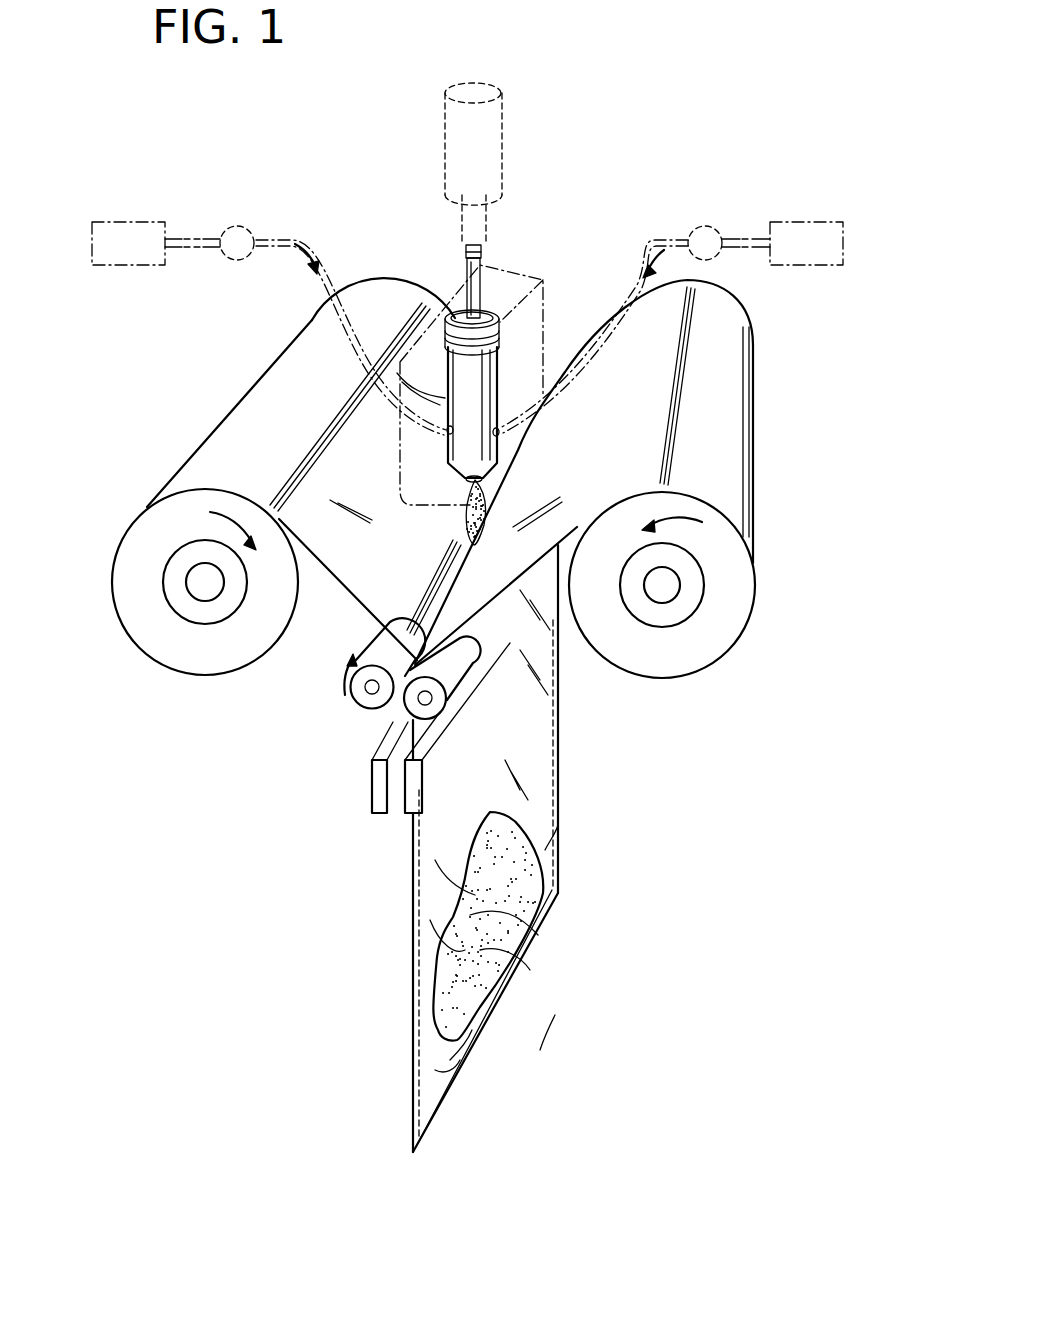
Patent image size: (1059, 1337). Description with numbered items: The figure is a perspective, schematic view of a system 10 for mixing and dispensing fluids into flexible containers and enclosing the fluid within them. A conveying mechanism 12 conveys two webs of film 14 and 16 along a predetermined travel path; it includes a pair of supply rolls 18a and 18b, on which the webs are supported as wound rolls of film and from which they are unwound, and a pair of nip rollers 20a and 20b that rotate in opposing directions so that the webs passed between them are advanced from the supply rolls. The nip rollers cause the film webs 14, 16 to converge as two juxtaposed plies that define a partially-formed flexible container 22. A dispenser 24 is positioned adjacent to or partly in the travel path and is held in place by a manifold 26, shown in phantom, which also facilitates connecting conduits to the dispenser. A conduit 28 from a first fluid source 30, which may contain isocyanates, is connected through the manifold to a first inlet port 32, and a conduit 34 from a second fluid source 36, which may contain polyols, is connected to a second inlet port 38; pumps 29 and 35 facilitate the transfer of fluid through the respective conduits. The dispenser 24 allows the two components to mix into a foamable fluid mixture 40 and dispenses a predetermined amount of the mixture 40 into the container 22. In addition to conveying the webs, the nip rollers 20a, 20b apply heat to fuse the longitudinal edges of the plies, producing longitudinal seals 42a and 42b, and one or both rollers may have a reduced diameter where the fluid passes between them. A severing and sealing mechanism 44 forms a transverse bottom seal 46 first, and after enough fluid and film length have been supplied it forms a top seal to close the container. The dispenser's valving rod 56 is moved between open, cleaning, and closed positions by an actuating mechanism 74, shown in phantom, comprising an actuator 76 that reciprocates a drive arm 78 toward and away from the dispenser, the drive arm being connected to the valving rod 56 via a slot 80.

The system 10 is at (664, 64).
The conveying mechanism 12 is at (312, 720).
The film web 14 is at (228, 443).
The film web 16 is at (713, 395).
The supply roll 18a is at (182, 600).
The supply roll 18b is at (683, 600).
The nip roller 20a is at (370, 708).
The nip roller 20b is at (442, 707).
The partially-formed flexible container 22 is at (410, 955).
The dispenser 24 is at (500, 370).
The manifold 26 is at (498, 266).
The conduit 28 is at (632, 272).
The pump 29 is at (720, 258).
The first fluid source 30 is at (790, 222).
The first inlet port 32 is at (500, 434).
The conduit 34 is at (318, 290).
The pump 35 is at (232, 226).
The second fluid source 36 is at (150, 222).
The second inlet port 38 is at (445, 432).
The foamable fluid mixture 40 is at (468, 512).
The longitudinal seal 42a is at (425, 1068).
The longitudinal seal 42b is at (558, 781).
The severing and sealing mechanism 44 is at (410, 808).
The transverse bottom seal 46 is at (505, 1008).
The valving rod 56 is at (467, 308).
The actuating mechanism 74 is at (506, 131).
The actuator 76 is at (446, 143).
The drive arm 78 is at (462, 222).
The slot 80 is at (467, 253).